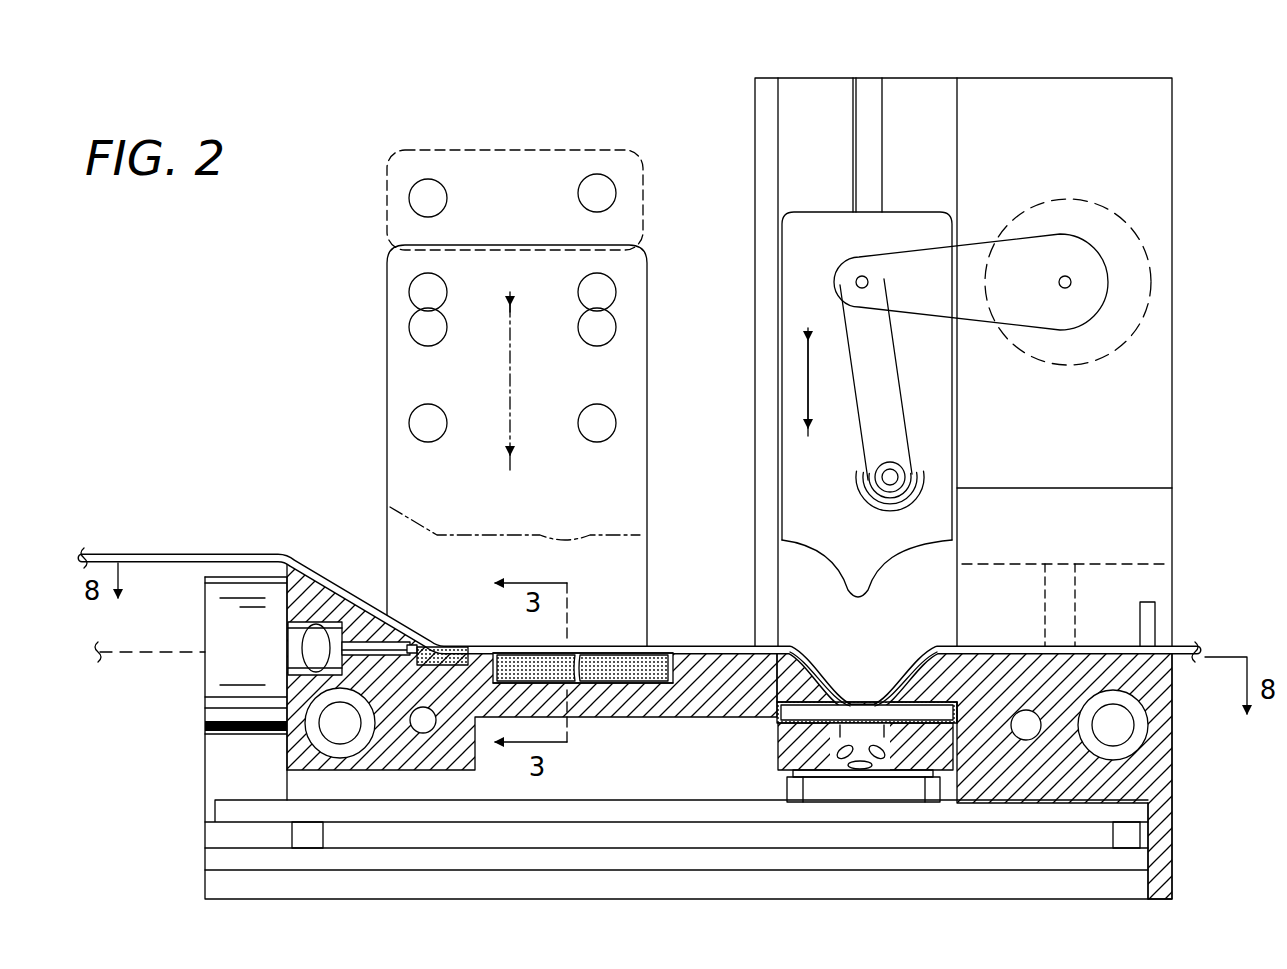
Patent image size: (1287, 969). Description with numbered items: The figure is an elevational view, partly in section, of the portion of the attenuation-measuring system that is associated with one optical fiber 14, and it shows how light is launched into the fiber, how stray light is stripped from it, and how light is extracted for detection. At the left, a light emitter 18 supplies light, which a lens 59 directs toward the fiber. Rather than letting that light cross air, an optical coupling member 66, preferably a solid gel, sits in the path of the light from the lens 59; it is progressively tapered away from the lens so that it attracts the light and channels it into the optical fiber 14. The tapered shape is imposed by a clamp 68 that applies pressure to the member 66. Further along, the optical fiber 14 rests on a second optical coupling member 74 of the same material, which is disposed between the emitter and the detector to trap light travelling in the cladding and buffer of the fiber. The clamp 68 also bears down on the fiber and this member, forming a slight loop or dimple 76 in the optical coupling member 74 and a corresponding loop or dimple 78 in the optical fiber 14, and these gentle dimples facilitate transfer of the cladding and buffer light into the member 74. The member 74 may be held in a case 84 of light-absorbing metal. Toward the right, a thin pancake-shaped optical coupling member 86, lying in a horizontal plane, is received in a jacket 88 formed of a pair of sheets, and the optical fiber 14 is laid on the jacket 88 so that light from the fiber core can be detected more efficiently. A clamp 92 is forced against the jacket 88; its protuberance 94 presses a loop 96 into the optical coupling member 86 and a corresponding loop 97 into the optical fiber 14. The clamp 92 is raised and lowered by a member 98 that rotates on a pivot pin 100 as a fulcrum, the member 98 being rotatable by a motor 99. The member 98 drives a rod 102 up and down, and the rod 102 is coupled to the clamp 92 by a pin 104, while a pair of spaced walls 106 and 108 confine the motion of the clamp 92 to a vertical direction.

The optical fiber 14 is at (242, 555).
The light emitter 18 is at (232, 735).
The lens 59 is at (318, 621).
The optical coupling member 66 is at (445, 648).
The clamp 68 is at (628, 452).
The optical coupling member 74 is at (660, 655).
The loop or dimple 76 is at (577, 683).
The loop or dimple 78 is at (583, 655).
The case 84 is at (645, 685).
The optical coupling member 86 is at (945, 700).
The jacket 88 is at (803, 702).
The clamp 92 is at (938, 408).
The protuberance 94 is at (865, 700).
The loop 96 is at (852, 700).
The loop 97 is at (905, 705).
The member 98 is at (975, 250).
The motor 99 is at (1098, 205).
The pivot pin 100 is at (1073, 290).
The rod 102 is at (900, 382).
The pin 104 is at (907, 465).
The wall 106 is at (778, 117).
The wall 108 is at (957, 120).